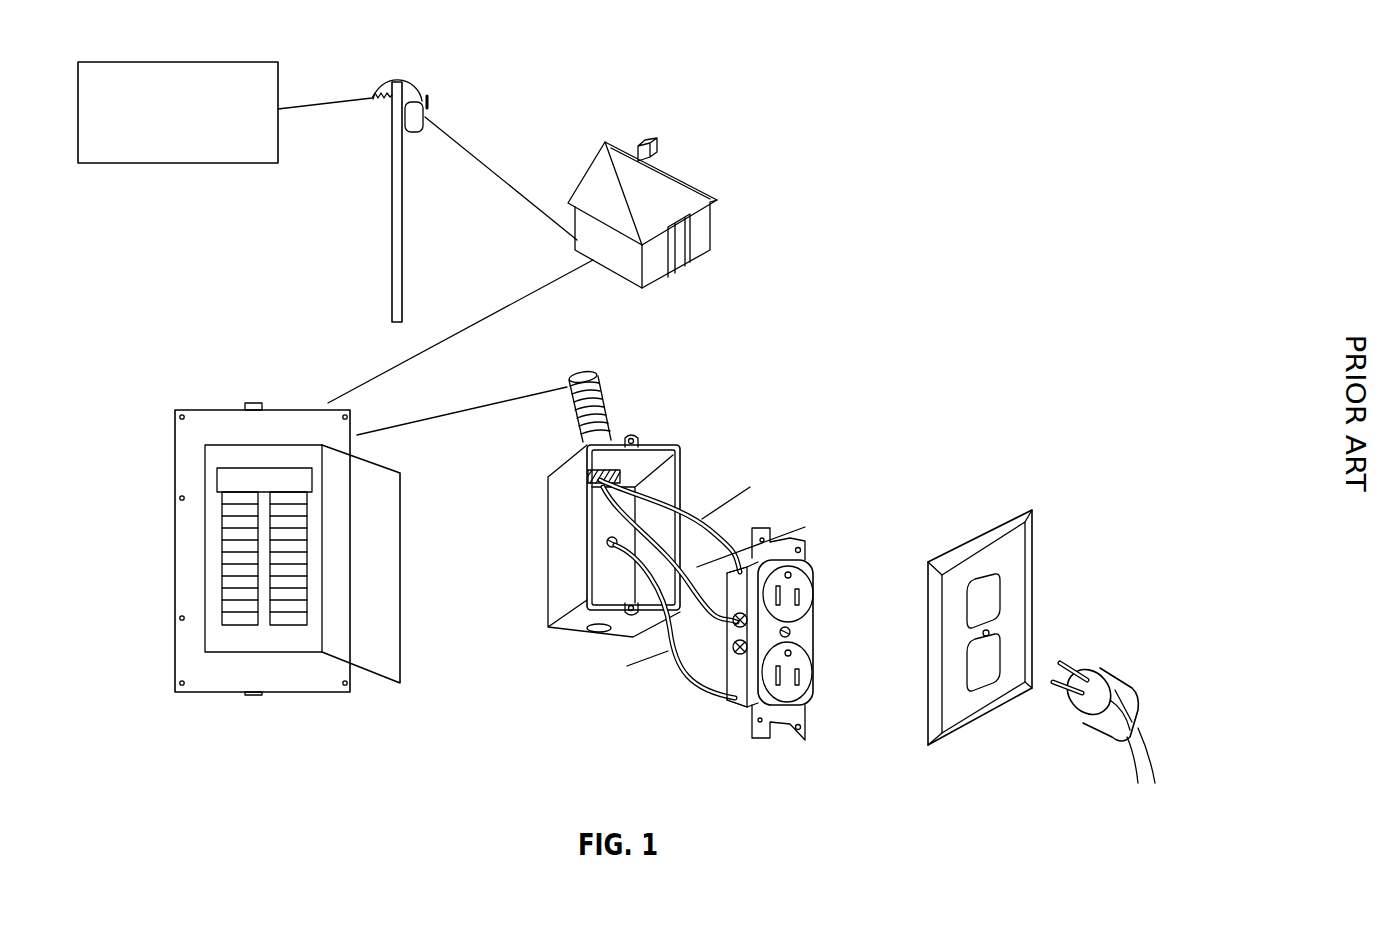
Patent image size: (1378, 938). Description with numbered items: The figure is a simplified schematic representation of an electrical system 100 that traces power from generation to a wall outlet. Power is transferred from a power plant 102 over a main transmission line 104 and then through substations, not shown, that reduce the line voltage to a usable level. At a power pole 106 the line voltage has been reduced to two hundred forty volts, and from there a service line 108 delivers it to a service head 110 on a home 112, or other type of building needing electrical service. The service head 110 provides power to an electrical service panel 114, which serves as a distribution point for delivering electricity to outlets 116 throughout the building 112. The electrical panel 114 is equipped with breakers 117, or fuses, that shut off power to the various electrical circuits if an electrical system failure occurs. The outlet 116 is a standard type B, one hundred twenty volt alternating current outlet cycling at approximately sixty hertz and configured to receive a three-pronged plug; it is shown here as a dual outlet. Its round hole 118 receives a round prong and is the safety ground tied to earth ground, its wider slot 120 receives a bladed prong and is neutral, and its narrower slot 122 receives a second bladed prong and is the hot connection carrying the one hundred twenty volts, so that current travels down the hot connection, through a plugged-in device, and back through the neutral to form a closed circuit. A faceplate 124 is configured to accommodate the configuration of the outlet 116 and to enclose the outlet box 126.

The electrical system 100 is at (616, 405).
The power plant 102 is at (178, 95).
The main transmission line 104 is at (335, 82).
The power pole 106 is at (366, 201).
The service line 108 is at (501, 178).
The service head 110 is at (642, 225).
The home 112 is at (675, 152).
The electrical service panel 114 is at (261, 536).
The outlet 116 is at (810, 634).
The breakers 117 is at (217, 546).
The round hole 118 is at (828, 560).
The wider slot 120 is at (839, 590).
The narrower slot 122 is at (829, 617).
The faceplate 124 is at (980, 617).
The outlet box 126 is at (578, 503).